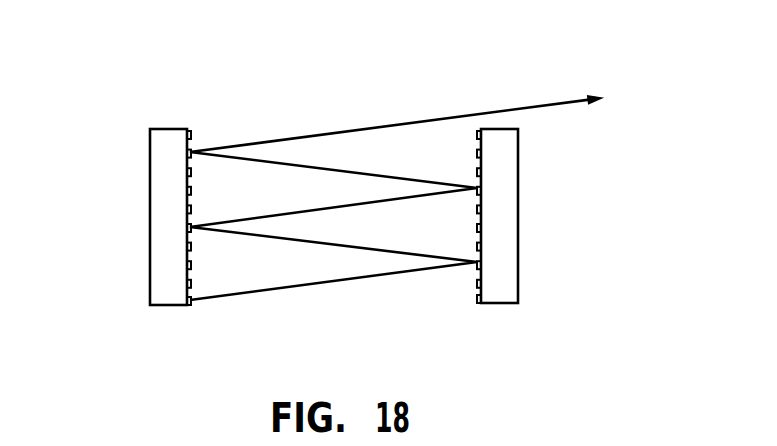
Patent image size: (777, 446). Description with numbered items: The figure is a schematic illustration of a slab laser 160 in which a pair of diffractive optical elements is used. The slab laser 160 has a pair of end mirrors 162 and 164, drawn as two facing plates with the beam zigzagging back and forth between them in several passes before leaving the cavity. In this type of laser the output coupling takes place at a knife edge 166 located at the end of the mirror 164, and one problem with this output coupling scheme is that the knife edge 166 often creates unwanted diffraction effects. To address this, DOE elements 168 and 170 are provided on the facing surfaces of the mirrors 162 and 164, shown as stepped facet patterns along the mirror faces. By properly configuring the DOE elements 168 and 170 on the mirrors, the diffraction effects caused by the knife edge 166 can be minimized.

The slab laser 160 is at (330, 97).
The end mirror 162 is at (150, 208).
The end mirror 164 is at (518, 255).
The knife edge 166 is at (500, 128).
The DOE element 168 is at (191, 277).
The DOE element 170 is at (477, 276).